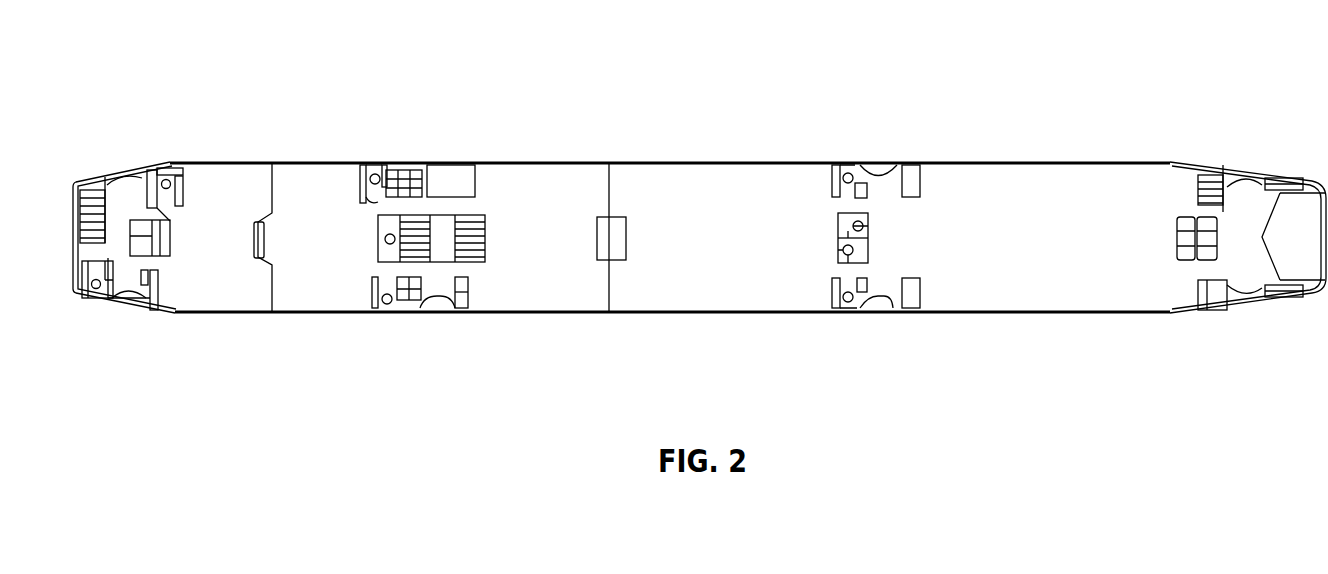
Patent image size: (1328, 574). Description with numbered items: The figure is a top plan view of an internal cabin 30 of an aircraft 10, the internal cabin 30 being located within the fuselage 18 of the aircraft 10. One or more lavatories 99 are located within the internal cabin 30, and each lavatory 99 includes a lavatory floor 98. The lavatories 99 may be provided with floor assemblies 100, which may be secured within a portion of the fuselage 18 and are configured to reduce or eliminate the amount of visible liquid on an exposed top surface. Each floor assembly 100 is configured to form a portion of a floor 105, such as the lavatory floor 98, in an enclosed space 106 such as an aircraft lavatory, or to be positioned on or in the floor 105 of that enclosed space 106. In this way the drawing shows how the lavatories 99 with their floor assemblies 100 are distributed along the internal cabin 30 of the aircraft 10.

The aircraft 10 is at (1197, 57).
The fuselage 18 is at (725, 82).
The internal cabin 30 is at (291, 144).
The lavatory floor 98 is at (370, 212).
The lavatory 99 is at (380, 150).
The floor assembly 100 is at (352, 202).
The floor 105 is at (378, 200).
The enclosed space 106 is at (357, 214).